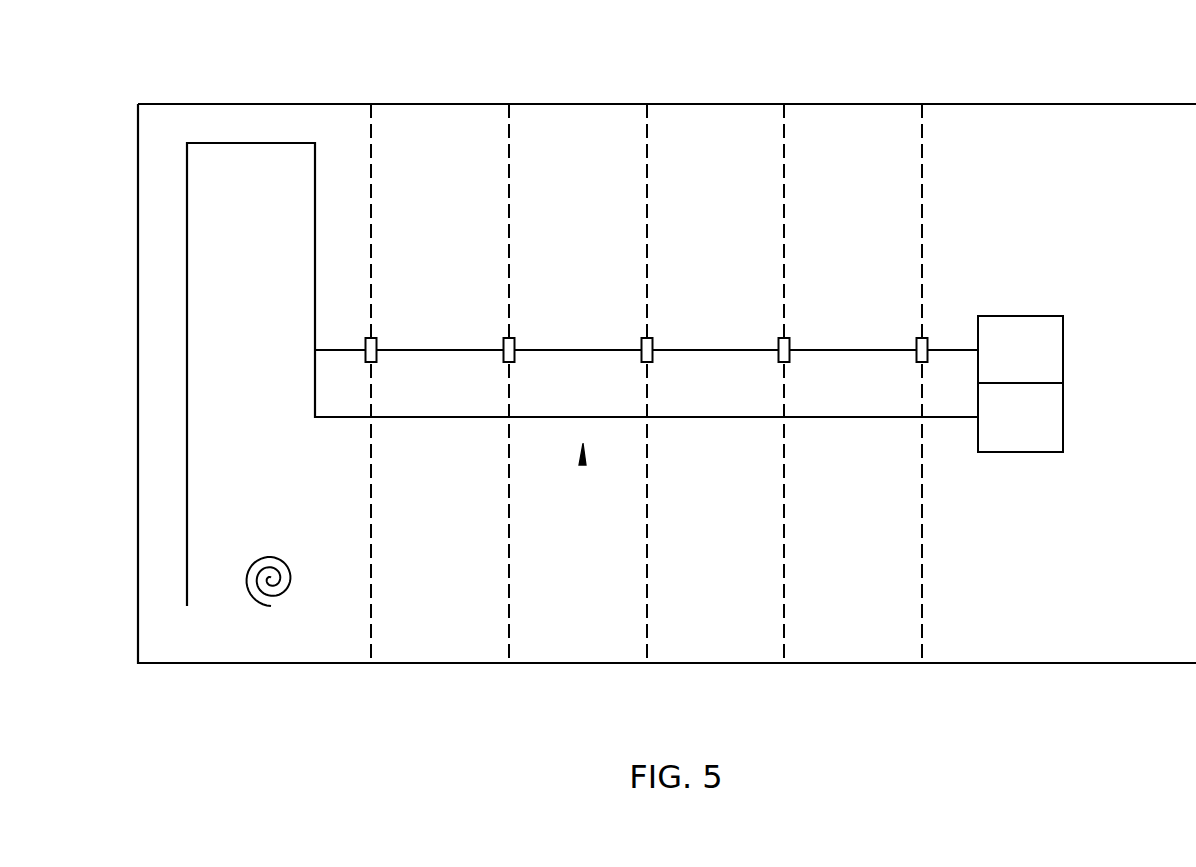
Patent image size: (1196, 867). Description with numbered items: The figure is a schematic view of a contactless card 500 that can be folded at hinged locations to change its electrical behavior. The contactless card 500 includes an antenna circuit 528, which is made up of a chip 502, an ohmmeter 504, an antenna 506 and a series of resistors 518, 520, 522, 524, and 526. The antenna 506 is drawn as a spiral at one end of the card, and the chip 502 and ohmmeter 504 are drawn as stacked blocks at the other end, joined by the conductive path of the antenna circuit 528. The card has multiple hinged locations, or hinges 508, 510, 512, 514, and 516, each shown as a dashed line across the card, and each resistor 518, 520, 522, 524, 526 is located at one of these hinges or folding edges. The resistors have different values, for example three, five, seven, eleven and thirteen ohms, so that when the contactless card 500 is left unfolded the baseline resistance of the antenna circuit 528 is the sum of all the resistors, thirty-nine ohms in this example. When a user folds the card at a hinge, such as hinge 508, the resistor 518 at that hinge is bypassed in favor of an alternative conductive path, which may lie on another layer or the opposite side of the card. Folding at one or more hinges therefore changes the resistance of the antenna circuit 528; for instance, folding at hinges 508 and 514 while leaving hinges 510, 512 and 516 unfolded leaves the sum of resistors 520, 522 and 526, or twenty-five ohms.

The contactless card 500 is at (1037, 60).
The chip 502 is at (1063, 350).
The ohmmeter 504 is at (1063, 417).
The antenna 506 is at (283, 601).
The hinge 508 is at (371, 638).
The hinge 510 is at (509, 634).
The hinge 512 is at (647, 637).
The hinge 514 is at (784, 637).
The hinge 516 is at (922, 637).
The resistor 518 is at (377, 342).
The resistor 520 is at (515, 342).
The resistor 522 is at (653, 342).
The resistor 524 is at (790, 342).
The resistor 526 is at (928, 342).
The antenna circuit 528 is at (582, 458).